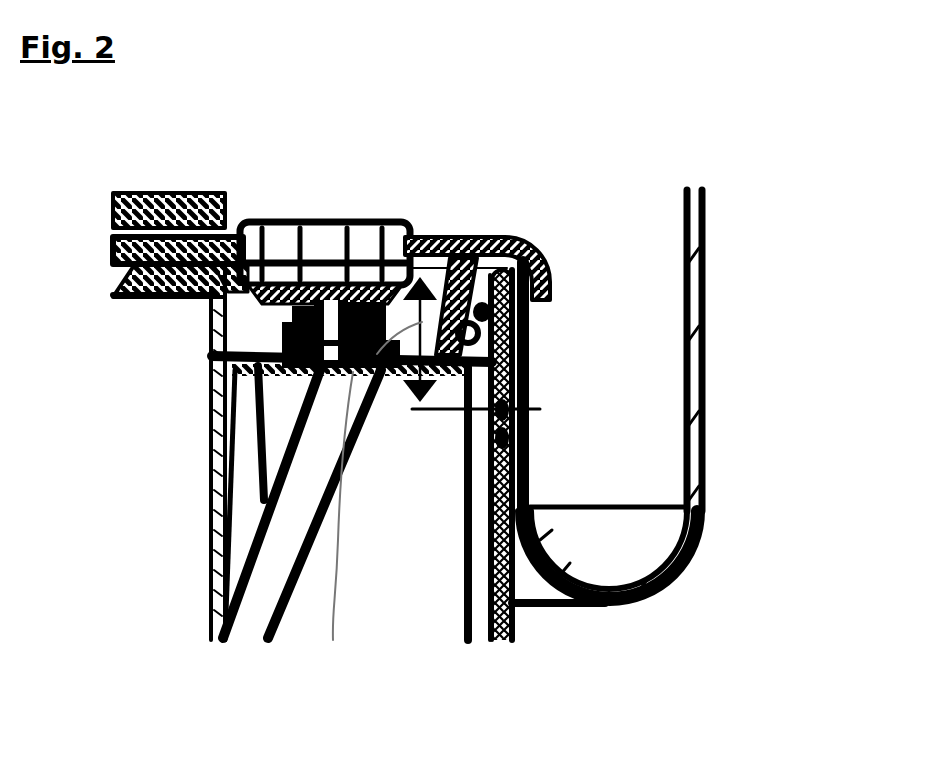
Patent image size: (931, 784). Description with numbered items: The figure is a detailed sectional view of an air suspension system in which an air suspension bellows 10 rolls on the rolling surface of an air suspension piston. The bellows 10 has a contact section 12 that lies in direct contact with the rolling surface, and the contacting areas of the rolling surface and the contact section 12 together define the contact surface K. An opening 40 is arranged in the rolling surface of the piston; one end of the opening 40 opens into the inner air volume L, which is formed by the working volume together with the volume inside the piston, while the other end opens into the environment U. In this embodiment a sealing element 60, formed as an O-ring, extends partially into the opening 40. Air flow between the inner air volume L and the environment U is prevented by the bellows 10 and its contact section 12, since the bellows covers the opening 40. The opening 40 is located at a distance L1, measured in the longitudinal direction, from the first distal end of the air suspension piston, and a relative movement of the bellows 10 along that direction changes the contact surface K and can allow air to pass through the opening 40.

The air suspension bellows 10 is at (707, 322).
The contact section 12 is at (540, 642).
The opening 40 is at (527, 413).
The sealing element 60 is at (512, 408).
The contact surface K is at (510, 352).
The inner air volume L is at (422, 139).
The distance L1 is at (351, 542).
The environment U is at (817, 506).